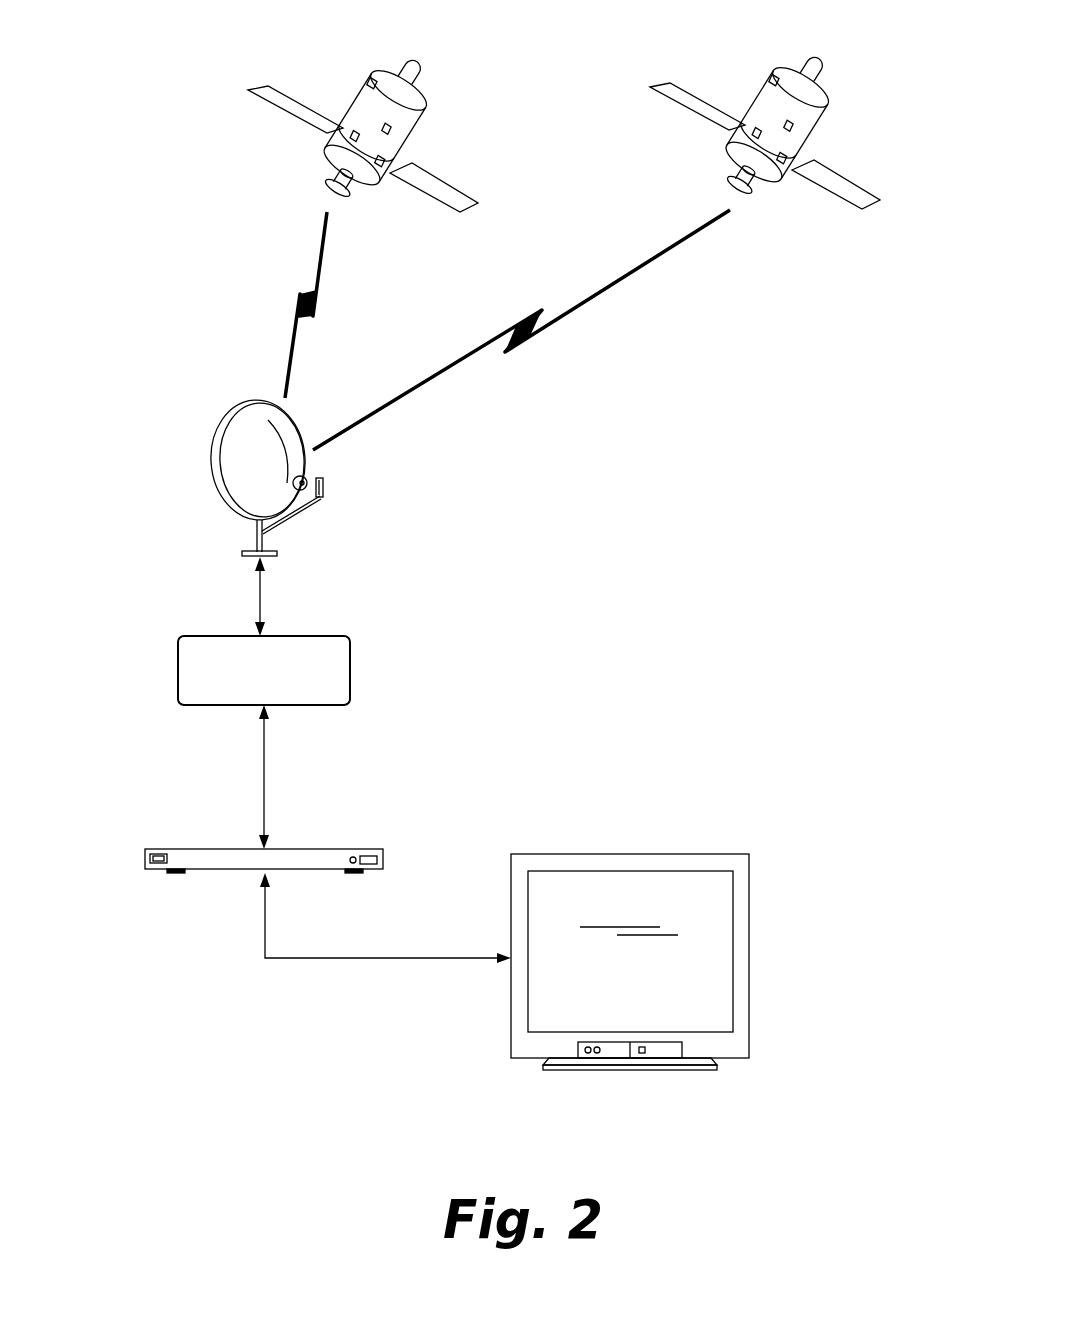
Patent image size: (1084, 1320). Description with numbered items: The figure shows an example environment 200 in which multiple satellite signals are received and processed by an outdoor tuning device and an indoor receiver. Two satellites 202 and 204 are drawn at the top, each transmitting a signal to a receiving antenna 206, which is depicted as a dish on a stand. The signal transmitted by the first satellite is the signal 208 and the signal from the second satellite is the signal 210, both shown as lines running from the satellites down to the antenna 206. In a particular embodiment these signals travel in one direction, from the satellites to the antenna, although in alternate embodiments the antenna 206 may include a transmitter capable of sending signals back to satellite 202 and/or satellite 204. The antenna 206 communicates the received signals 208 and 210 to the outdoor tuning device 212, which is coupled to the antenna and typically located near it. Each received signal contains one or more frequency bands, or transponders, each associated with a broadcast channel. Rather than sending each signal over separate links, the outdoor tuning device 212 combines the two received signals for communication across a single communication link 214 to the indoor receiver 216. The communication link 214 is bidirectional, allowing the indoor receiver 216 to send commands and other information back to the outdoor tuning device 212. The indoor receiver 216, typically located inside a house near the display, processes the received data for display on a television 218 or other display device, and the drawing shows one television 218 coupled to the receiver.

The environment 200 is at (171, 38).
The satellite 202 is at (290, 124).
The satellite 204 is at (697, 120).
The receiving antenna 206 is at (235, 403).
The signal 208 is at (295, 332).
The signal 210 is at (467, 360).
The outdoor tuning device 212 is at (180, 665).
The communication link 214 is at (263, 787).
The indoor receiver 216 is at (193, 849).
The television 218 is at (560, 854).